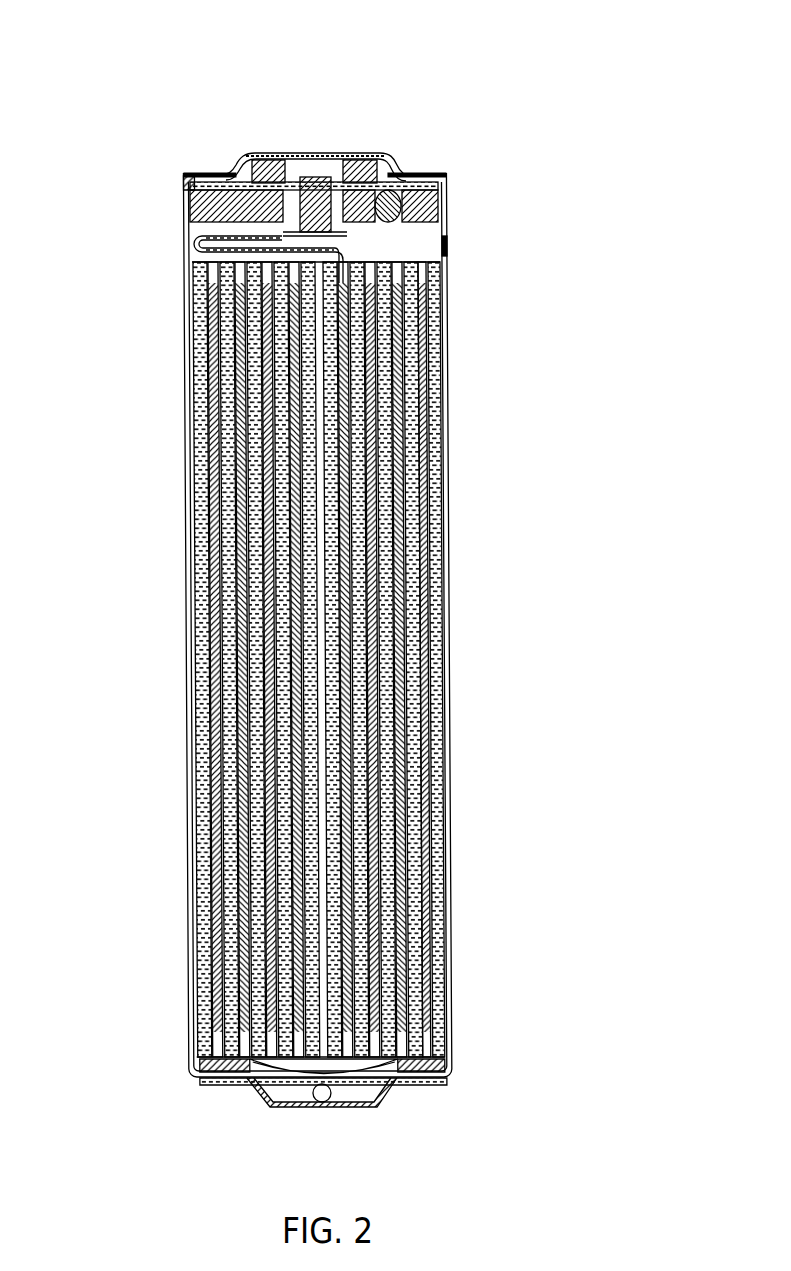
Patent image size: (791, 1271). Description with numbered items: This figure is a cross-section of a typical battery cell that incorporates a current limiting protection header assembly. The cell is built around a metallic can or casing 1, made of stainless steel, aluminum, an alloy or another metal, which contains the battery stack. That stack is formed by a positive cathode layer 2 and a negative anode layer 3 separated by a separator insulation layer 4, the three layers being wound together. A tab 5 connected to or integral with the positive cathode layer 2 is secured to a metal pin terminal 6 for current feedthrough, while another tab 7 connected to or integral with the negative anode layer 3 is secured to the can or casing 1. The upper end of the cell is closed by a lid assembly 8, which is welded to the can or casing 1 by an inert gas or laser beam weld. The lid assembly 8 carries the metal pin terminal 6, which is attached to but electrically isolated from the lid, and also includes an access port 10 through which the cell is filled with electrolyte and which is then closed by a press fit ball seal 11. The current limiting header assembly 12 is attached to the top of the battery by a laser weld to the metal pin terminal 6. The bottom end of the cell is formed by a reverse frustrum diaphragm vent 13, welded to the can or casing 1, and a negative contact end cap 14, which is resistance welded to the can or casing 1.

The can or casing 1 is at (447, 377).
The positive cathode layer 2 is at (397, 518).
The negative anode layer 3 is at (370, 633).
The separator insulation layer 4 is at (407, 787).
The tab 5 is at (197, 245).
The metal pin terminal 6 is at (253, 173).
The tab 7 is at (443, 247).
The lid assembly 8 is at (183, 207).
The access port 10 is at (405, 233).
The press fit ball seal 11 is at (403, 173).
The current limiting header assembly 12 is at (442, 173).
The reverse frustrum diaphragm vent 13 is at (363, 1068).
The negative contact end cap 14 is at (270, 1110).